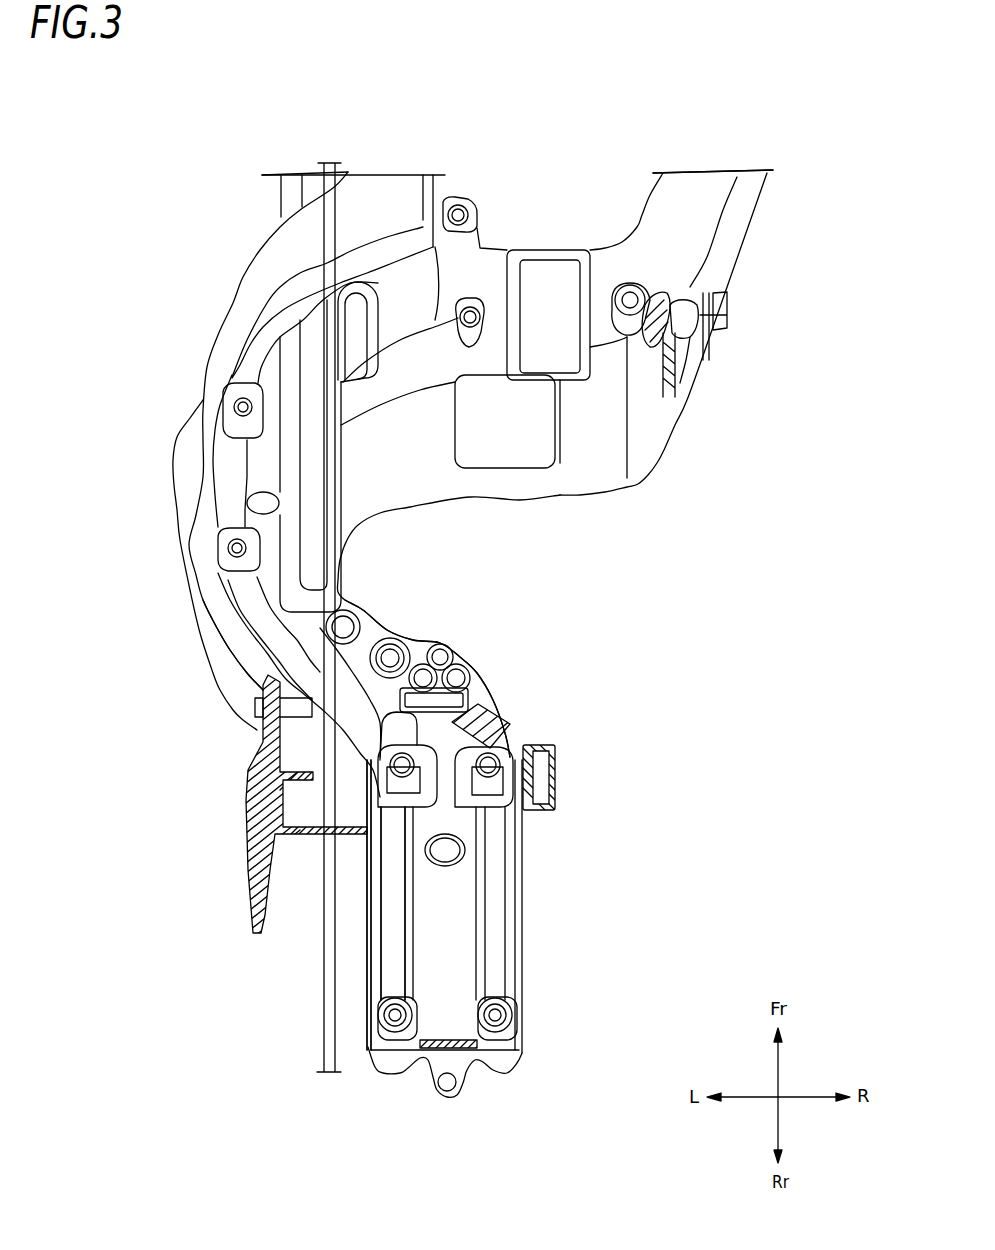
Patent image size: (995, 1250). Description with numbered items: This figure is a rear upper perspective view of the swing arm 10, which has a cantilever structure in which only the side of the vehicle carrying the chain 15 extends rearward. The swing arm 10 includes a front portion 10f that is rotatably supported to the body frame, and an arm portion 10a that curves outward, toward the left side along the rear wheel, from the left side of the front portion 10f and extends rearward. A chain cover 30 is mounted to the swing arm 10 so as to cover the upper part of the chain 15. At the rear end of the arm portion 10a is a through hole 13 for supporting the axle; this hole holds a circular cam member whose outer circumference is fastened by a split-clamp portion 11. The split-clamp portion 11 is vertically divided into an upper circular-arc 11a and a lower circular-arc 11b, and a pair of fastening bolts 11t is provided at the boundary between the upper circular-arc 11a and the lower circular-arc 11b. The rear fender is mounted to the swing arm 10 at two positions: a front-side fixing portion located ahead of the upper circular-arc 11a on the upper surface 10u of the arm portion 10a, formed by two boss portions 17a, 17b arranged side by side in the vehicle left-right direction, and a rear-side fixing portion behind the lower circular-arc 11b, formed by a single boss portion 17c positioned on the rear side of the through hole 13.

The swing arm 10 is at (208, 362).
The front portion 10f is at (342, 175).
The arm portion 10a is at (177, 487).
The upper surface 10u is at (487, 710).
The split-clamp portion 11 is at (524, 1050).
The upper circular-arc 11a is at (403, 953).
The lower circular-arc 11b is at (390, 1072).
The fastening bolts 11t is at (375, 1030).
The through hole 13 is at (367, 927).
The chain 15 is at (320, 658).
The boss portion 17a is at (445, 650).
The boss portion 17b is at (507, 740).
The boss portion 17c is at (428, 1088).
The chain cover 30 is at (258, 763).